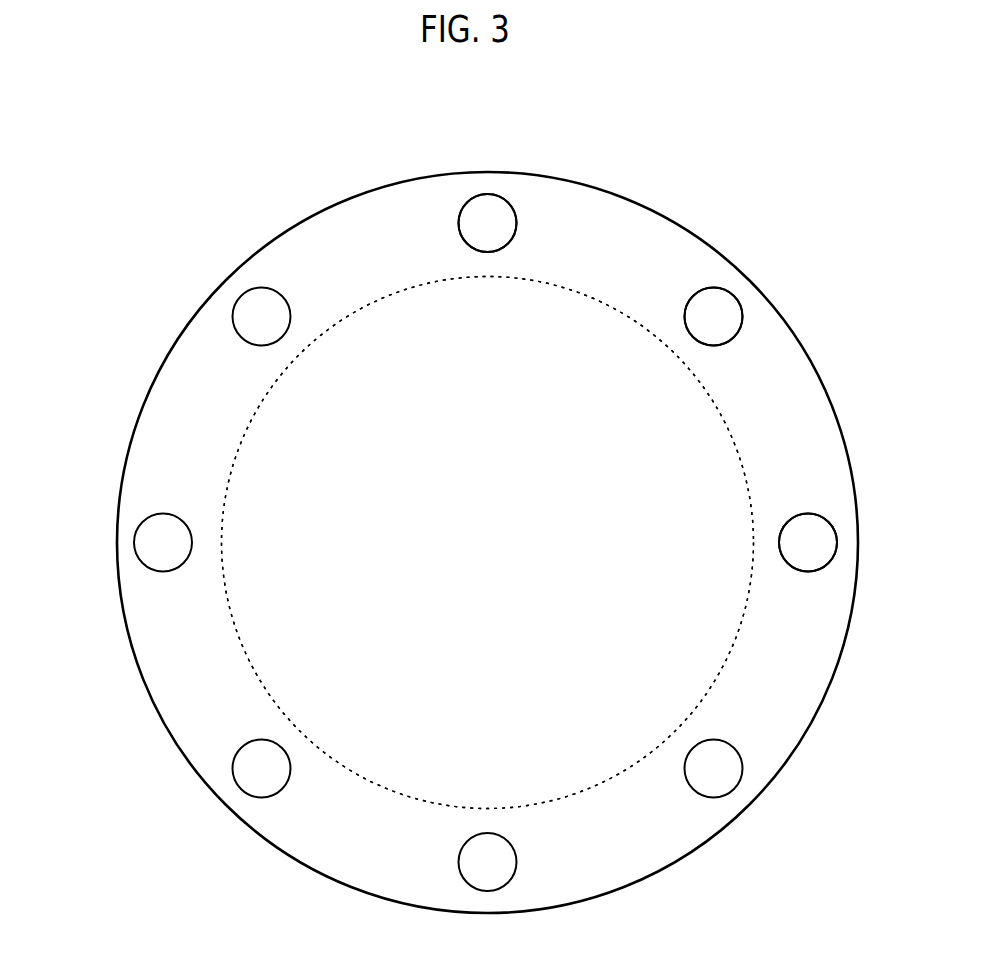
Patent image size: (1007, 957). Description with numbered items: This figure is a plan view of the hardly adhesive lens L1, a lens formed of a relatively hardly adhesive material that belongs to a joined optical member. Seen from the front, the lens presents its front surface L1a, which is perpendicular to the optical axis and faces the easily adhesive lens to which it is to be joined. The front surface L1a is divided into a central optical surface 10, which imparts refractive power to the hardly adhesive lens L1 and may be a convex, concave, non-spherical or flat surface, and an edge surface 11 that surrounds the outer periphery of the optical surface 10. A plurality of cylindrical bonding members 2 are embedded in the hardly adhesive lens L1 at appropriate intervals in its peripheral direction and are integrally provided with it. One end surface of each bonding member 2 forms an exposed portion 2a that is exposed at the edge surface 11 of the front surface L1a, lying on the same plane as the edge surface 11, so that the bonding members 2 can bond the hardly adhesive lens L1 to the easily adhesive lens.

The hardly adhesive lens L1 is at (156, 706).
The front surface L1a is at (402, 123).
The edge surface 11 is at (325, 257).
The optical surface 10 is at (402, 320).
The bonding member 2 is at (497, 197).
The exposed portion 2a is at (495, 220).